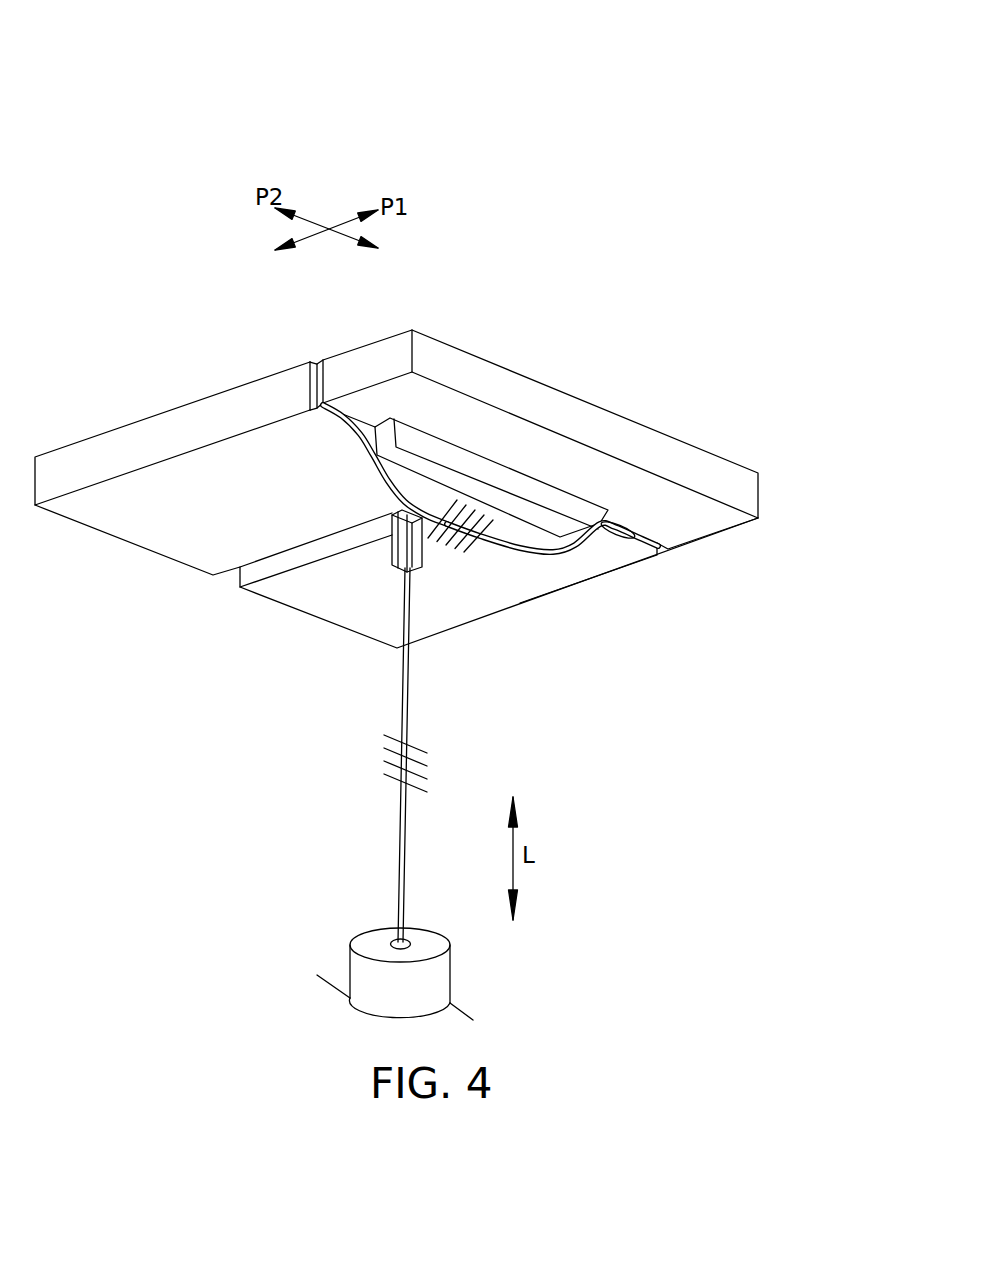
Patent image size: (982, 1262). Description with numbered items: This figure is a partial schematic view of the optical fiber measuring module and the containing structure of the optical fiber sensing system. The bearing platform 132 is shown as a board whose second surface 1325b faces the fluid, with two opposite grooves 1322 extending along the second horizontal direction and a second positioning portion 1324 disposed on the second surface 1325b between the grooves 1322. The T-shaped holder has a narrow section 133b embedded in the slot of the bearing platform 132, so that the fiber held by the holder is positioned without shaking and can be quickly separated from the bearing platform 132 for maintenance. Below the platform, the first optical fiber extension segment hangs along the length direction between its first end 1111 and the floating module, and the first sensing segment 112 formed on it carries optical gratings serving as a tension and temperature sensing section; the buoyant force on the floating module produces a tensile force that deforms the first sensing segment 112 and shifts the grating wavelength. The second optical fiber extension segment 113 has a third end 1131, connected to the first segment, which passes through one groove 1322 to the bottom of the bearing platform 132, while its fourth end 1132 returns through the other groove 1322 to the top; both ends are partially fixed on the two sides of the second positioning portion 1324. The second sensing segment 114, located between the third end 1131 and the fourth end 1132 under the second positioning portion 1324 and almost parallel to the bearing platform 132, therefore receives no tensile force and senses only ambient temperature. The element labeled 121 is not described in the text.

The bearing platform 132 is at (208, 48).
The grooves 1322 is at (310, 367).
The second surface 1325b is at (178, 497).
The fourth end 1132 is at (357, 438).
The second positioning portion 1324 is at (468, 492).
The narrow section 133b is at (392, 545).
The second sensing segment 114 is at (467, 545).
The second optical fiber extension segment 113 is at (537, 557).
The third end 1131 is at (602, 523).
The first sensing segment 112 is at (400, 743).
The first end 1111 is at (398, 843).
The weight 121 is at (367, 977).